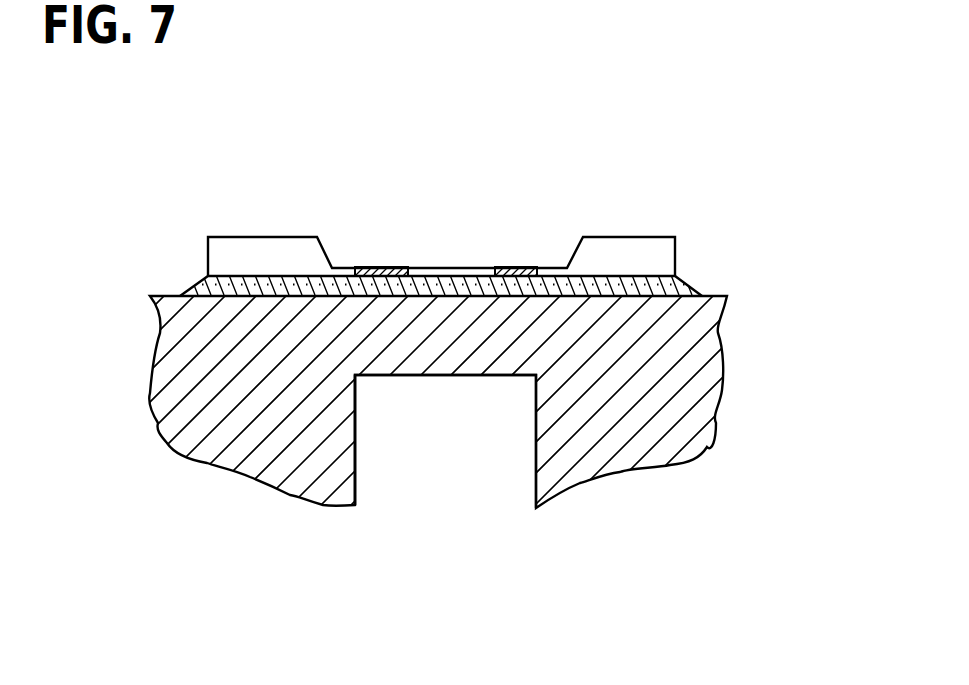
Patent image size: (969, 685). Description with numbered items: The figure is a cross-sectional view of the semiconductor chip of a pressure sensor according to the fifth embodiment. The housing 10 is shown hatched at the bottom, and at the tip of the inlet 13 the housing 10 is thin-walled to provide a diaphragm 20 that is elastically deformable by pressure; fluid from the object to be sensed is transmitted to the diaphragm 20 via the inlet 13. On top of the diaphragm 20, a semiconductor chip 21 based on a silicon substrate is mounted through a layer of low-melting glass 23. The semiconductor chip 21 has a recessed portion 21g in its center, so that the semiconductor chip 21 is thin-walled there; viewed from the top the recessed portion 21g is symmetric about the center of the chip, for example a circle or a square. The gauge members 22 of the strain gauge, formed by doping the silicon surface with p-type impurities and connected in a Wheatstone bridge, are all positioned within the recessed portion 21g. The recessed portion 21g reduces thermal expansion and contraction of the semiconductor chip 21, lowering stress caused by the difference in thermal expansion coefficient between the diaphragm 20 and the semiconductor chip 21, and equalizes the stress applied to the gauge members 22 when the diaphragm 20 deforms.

The housing 10 is at (704, 356).
The inlet 13 is at (357, 418).
The diaphragm 20 is at (462, 347).
The semiconductor chip 21 is at (684, 242).
The recessed portion 21g is at (448, 260).
The gauge members 22 is at (372, 267).
The low-melting glass 23 is at (684, 281).